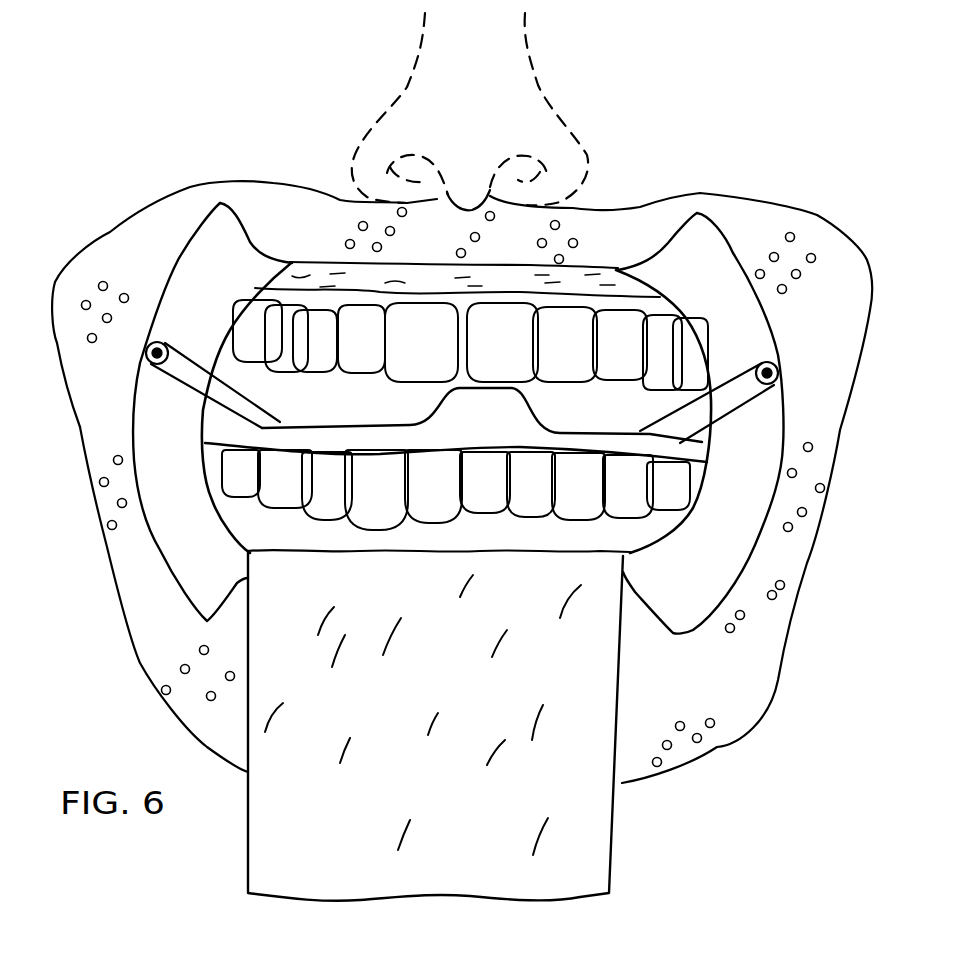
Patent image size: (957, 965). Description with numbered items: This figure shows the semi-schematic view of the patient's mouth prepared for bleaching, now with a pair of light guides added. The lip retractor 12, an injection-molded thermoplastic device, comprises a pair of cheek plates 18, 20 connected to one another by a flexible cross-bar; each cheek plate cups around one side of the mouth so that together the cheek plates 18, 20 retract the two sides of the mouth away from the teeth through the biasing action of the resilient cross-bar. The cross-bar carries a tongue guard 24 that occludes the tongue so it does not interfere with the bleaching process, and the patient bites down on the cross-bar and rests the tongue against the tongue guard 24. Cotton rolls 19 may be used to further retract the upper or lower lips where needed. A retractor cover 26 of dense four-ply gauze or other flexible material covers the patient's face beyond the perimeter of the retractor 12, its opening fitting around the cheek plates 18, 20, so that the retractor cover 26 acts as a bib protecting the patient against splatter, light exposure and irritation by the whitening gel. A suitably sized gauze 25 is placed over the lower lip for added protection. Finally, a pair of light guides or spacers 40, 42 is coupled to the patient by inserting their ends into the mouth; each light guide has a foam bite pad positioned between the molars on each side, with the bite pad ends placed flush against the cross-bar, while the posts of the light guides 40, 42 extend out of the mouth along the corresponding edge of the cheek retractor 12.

The lip retractor 12 is at (458, 441).
The cheek plate 18 is at (744, 509).
The cheek plate 20 is at (184, 486).
The cotton rolls 19 is at (583, 283).
The tongue guard 24 is at (430, 423).
The gauze 25 is at (587, 845).
The retractor cover 26 is at (740, 693).
The light guide 40 is at (750, 410).
The light guide 42 is at (186, 355).